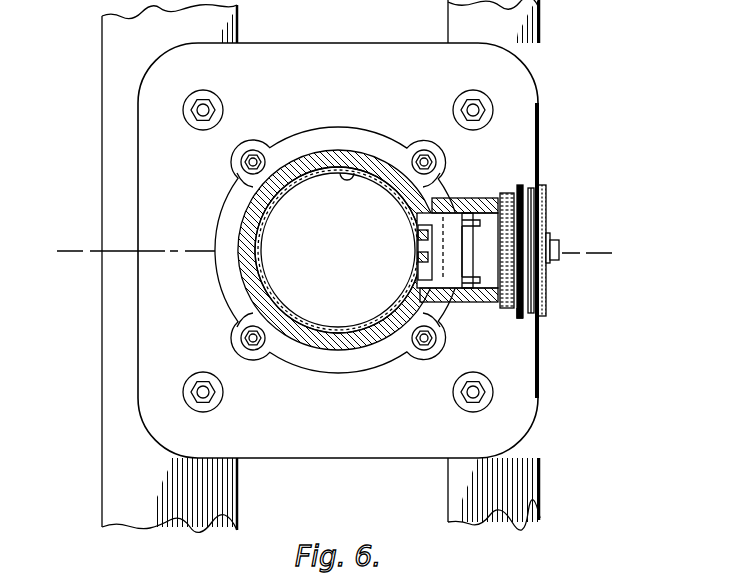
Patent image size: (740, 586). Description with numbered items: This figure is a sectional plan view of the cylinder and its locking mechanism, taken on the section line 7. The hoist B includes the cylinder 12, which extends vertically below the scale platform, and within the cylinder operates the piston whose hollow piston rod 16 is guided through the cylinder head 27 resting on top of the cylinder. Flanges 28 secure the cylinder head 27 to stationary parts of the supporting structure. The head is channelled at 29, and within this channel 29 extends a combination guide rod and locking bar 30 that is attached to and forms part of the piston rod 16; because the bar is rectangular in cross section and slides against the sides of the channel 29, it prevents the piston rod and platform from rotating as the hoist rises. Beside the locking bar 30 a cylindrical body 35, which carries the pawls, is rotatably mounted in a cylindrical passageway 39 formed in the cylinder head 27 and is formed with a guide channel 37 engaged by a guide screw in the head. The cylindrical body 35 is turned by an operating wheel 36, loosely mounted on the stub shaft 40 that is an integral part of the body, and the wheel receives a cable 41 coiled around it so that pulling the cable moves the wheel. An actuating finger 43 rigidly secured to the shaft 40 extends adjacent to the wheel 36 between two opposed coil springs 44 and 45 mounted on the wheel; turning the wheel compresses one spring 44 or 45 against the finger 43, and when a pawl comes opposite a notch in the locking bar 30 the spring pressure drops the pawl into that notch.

The section line 7 is at (331, 253).
The hoist B is at (365, 167).
The cylinder 12 is at (276, 298).
The piston rod 16 is at (340, 330).
The cylinder head 27 is at (310, 345).
The flanges 28 is at (157, 390).
The channel 29 is at (440, 200).
The combination guide rod and locking bar 30 is at (417, 258).
The cylindrical body 35 is at (453, 282).
The operating wheel 36 is at (550, 210).
The guide channel 37 is at (480, 268).
The cylindrical passageway 39 is at (493, 200).
The stub shaft 40 is at (555, 243).
The cable 41 is at (535, 200).
The actuating finger 43 is at (480, 251).
The coil spring 44 is at (523, 185).
The coil spring 45 is at (518, 312).